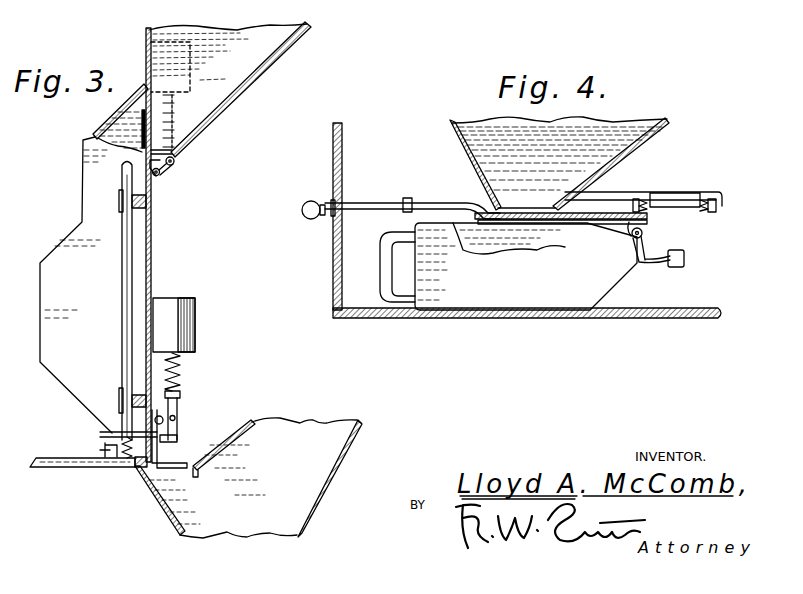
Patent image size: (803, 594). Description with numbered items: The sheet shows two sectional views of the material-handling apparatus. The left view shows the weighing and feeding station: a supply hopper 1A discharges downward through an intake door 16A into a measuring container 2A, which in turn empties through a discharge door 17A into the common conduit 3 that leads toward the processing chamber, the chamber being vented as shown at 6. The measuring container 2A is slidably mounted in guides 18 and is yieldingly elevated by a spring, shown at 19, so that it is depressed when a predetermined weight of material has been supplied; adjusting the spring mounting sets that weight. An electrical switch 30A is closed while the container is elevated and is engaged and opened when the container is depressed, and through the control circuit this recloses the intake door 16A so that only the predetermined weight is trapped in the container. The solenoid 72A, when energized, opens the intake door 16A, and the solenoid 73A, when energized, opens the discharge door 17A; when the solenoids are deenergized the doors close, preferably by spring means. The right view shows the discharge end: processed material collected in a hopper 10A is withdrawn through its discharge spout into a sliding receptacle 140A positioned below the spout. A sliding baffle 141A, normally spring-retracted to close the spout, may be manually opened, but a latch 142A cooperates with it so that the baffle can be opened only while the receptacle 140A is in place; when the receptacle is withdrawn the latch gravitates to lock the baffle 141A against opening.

In FIG. 3, the supply hopper 1A is at (252, 66).
In FIG. 3, the solenoid 72A is at (167, 62).
In FIG. 3, the door 16A is at (140, 126).
In FIG. 3, the measuring container 2A is at (63, 263).
In FIG. 3, the guide 18 is at (127, 275).
In FIG. 3, the solenoid 73A is at (180, 325).
In FIG. 3, the door 17A is at (143, 450).
In FIG. 3, the electrical switch 30A is at (100, 450).
In FIG. 3, the spring 19 is at (113, 468).
In FIG. 3, the conduit 3 is at (180, 500).
In FIG. 3, the vent 6 is at (313, 468).
In FIG. 4, the hopper 10A is at (470, 153).
In FIG. 4, the sliding receptacle 140A is at (475, 290).
In FIG. 4, the sliding baffle 141A is at (531, 218).
In FIG. 4, the latch 142A is at (625, 225).